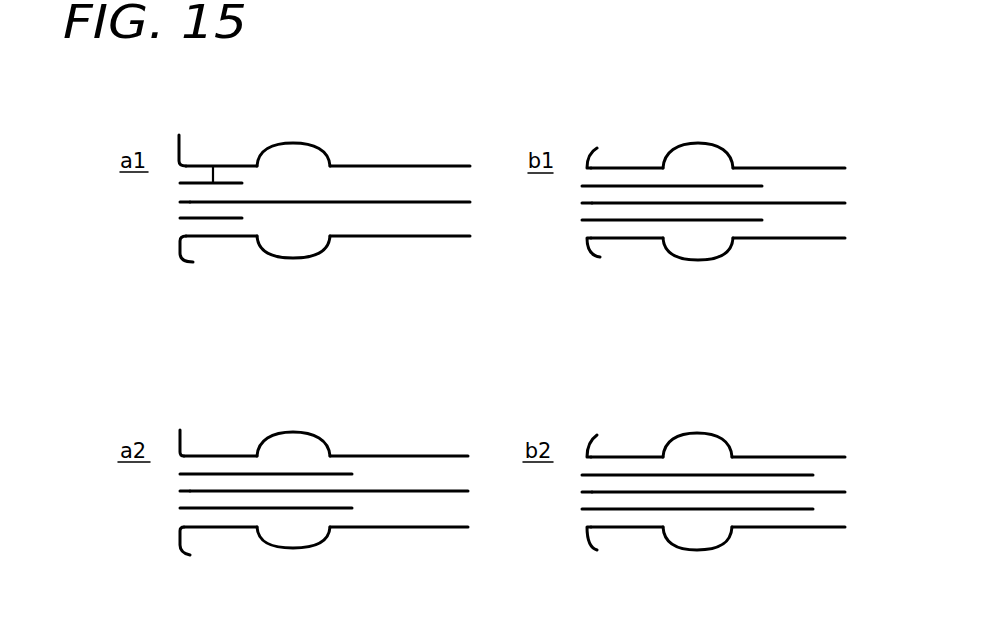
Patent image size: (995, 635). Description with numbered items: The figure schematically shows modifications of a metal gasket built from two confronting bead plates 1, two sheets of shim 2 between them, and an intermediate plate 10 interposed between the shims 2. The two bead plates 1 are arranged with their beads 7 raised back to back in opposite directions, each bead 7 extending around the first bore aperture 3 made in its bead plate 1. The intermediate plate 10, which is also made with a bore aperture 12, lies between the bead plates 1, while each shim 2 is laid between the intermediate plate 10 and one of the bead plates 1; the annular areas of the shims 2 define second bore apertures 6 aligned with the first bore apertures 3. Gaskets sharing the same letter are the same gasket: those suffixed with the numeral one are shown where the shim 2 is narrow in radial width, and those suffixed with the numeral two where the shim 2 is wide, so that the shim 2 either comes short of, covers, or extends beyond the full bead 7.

The bead plate 1 is at (430, 252).
The shim 2 is at (242, 278).
The first bore aperture 3 is at (392, 347).
The second bore aperture 6 is at (180, 218).
The bead 7 is at (303, 259).
The intermediate plate 10 is at (860, 468).
The bore aperture 12 is at (582, 492).